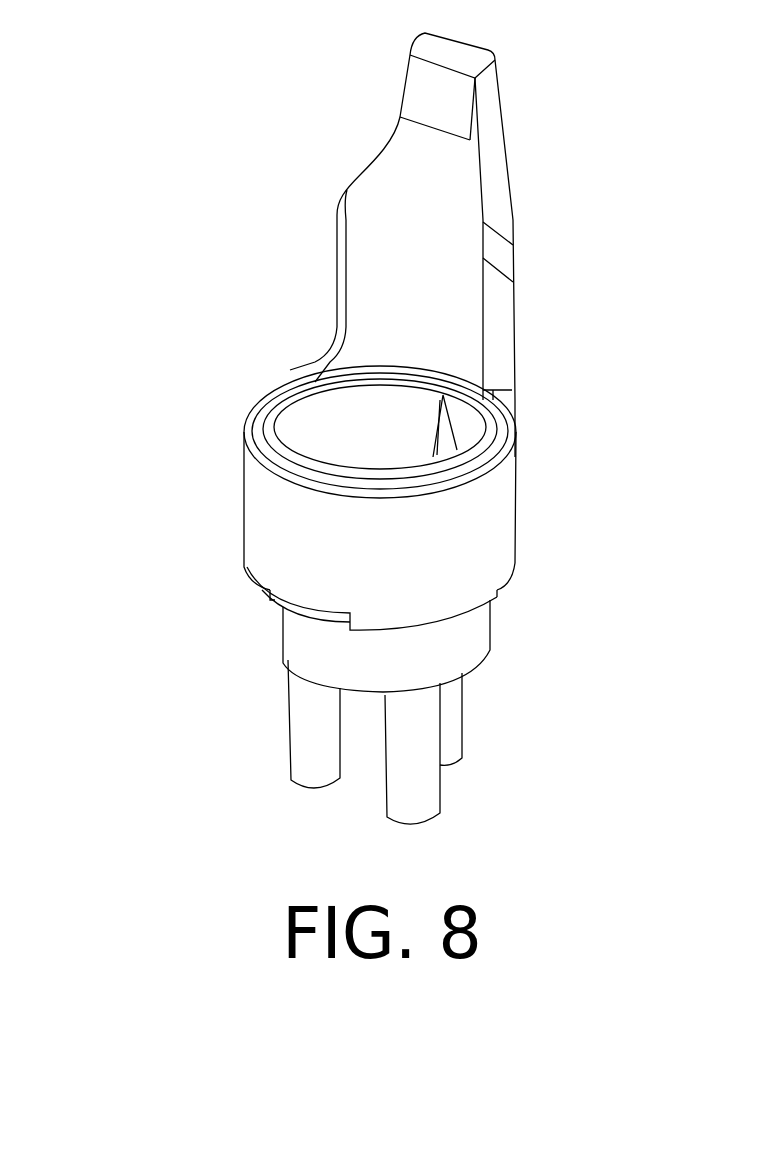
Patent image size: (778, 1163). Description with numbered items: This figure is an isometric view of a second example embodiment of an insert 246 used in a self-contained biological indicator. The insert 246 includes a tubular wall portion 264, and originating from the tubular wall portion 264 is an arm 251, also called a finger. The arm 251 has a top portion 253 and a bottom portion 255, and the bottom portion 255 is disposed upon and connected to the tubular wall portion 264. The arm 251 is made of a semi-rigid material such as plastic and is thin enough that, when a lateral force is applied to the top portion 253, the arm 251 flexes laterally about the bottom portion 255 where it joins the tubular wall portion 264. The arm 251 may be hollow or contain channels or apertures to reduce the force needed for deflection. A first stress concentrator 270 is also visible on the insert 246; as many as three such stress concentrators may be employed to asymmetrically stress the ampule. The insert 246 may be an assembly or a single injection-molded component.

The insert 246 is at (176, 191).
The top portion 253 is at (534, 115).
The arm 251 is at (450, 253).
The bottom portion 255 is at (556, 356).
The tubular wall portion 264 is at (345, 547).
The first stress concentrator 270 is at (443, 433).